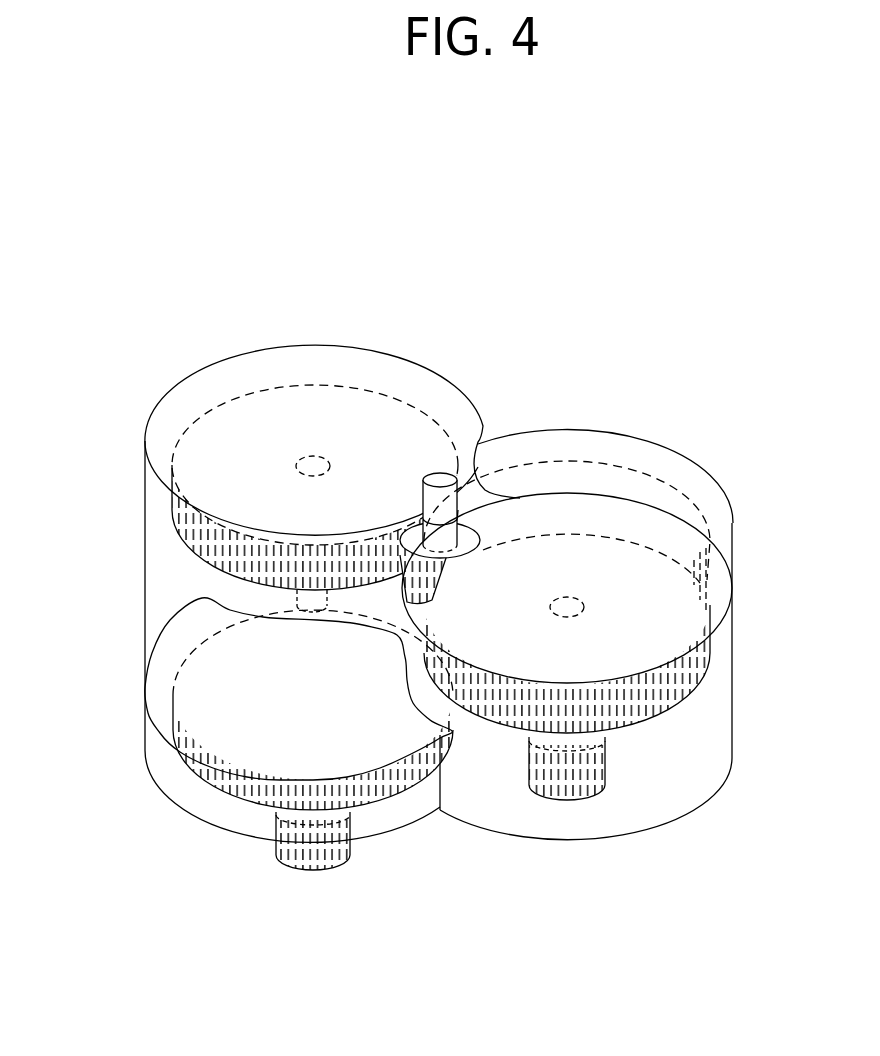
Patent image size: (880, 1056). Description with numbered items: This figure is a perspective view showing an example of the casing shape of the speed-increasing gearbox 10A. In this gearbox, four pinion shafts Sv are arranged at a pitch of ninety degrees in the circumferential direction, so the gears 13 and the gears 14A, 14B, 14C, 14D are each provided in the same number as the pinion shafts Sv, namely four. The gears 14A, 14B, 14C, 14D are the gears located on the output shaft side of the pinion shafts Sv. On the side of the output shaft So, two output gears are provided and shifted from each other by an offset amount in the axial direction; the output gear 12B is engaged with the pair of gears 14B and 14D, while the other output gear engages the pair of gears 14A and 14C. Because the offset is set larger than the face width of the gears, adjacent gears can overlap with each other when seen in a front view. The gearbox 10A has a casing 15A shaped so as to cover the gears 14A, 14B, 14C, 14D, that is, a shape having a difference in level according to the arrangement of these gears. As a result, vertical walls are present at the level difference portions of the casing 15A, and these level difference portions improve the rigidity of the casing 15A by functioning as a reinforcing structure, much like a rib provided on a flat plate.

The speed-increasing gearbox 10A is at (668, 320).
The output gear 12B is at (490, 527).
The gear 13 is at (597, 793).
The gear 14A is at (180, 753).
The gear 14B is at (396, 400).
The gear 14C is at (673, 486).
The gear 14D is at (694, 687).
The casing 15A is at (332, 429).
The output shaft So is at (436, 475).
The pinion shaft Sv is at (297, 463).